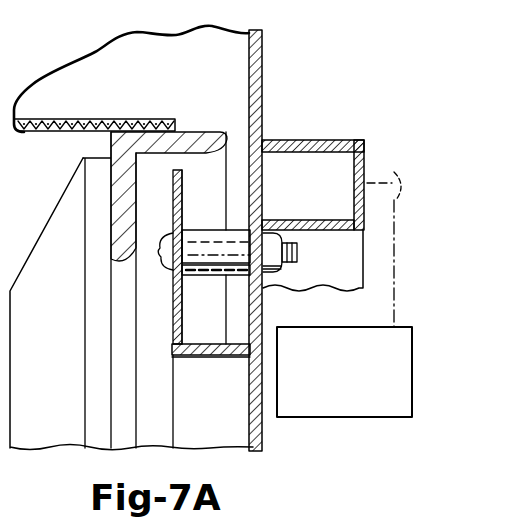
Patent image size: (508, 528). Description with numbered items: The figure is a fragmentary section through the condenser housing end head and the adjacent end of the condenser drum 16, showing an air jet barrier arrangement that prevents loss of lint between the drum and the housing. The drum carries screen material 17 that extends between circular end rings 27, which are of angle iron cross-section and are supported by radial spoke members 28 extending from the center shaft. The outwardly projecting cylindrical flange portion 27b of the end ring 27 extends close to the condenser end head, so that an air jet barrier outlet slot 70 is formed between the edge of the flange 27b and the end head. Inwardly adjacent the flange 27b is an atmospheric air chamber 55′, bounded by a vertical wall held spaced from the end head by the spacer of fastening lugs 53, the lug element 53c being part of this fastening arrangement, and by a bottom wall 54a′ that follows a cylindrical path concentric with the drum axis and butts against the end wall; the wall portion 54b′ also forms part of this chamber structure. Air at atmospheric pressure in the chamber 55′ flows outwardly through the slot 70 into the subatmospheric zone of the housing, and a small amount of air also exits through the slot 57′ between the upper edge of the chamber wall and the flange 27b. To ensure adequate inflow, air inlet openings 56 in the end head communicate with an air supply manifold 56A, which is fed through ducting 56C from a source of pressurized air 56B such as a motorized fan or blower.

The condenser drum 16 is at (134, 79).
The screen material 17 is at (109, 119).
The cylindrical flange portion 27b is at (193, 128).
The end ring 27 is at (122, 252).
The radial spoke member 28 is at (93, 429).
The air jet barrier outlet slot 70 is at (260, 126).
The atmospheric air chamber 55′ is at (213, 216).
The slot 57′ is at (176, 164).
The fastening lug 53 is at (297, 260).
The rod extension 53c is at (241, 276).
The bottom wall 54a′ is at (230, 357).
The cylinder wall 54b′ is at (172, 338).
The air supply manifold 56A is at (334, 140).
The air inlet opening 56 is at (255, 184).
The ducting 56C is at (387, 239).
The source of pressurized air 56B is at (369, 417).